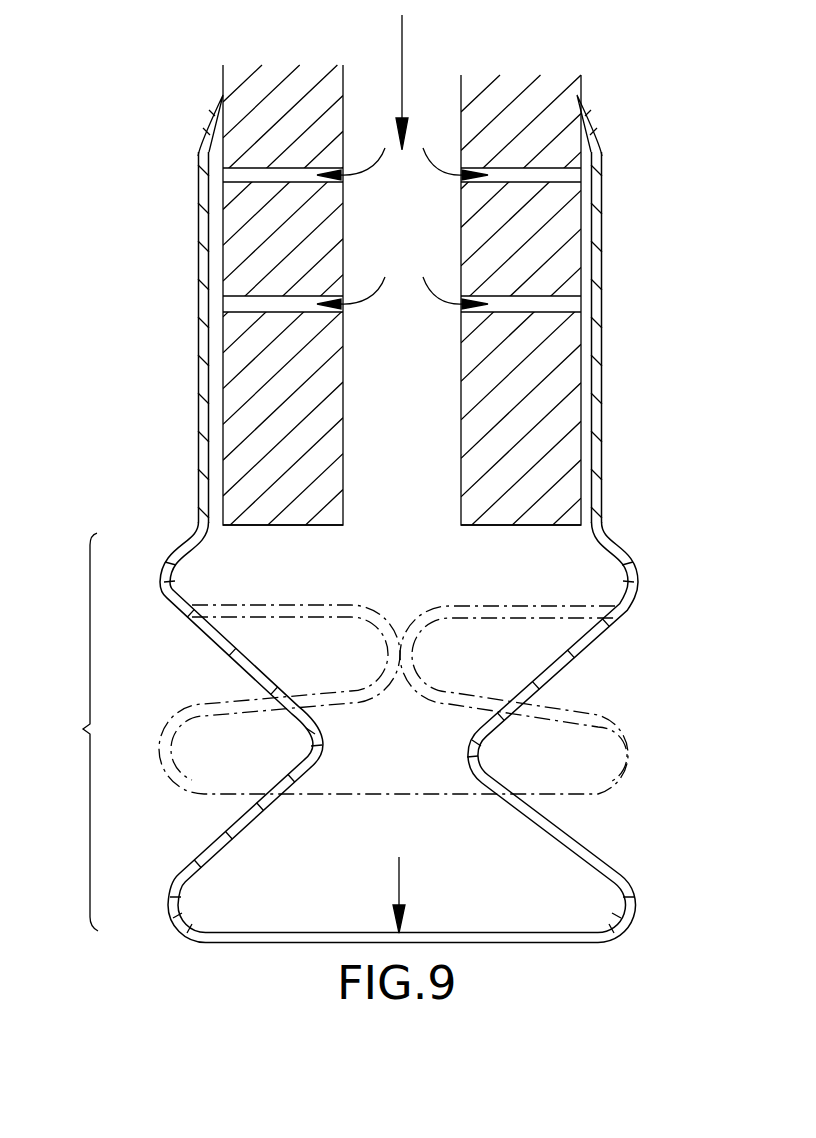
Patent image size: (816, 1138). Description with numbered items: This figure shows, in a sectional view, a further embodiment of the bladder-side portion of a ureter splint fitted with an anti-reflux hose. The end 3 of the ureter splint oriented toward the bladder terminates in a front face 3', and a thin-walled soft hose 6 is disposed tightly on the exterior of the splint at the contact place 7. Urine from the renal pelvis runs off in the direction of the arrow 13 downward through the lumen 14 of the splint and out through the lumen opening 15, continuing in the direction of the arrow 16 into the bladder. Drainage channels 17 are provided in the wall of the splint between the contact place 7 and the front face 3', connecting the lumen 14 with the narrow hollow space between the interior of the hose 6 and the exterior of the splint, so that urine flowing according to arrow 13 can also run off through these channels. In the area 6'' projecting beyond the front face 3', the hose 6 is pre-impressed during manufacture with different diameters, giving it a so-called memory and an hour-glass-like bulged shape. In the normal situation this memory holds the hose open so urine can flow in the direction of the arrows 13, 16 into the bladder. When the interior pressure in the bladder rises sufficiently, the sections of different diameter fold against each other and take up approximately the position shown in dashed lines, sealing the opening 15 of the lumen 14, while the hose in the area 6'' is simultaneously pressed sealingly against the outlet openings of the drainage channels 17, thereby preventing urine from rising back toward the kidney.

The end towards the bladder 3 is at (395, 295).
The front face 3' is at (402, 552).
The hose 6 is at (369, 337).
The area projecting beyond the front face 6'' is at (343, 730).
The contact place 7 is at (214, 121).
The arrow 13 is at (402, 47).
The lumen 14 is at (417, 377).
The lumen opening 15 is at (398, 527).
The arrow 16 is at (399, 882).
The drainage channels 17 is at (246, 173).